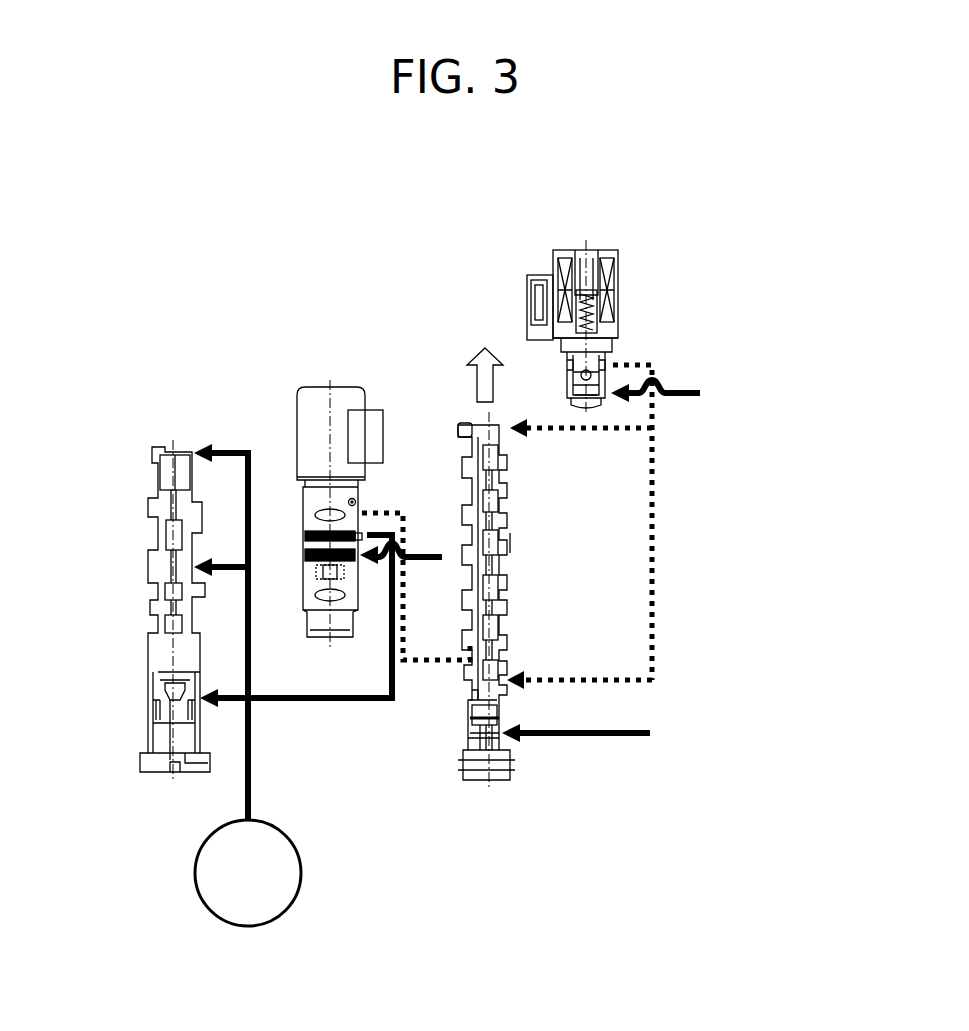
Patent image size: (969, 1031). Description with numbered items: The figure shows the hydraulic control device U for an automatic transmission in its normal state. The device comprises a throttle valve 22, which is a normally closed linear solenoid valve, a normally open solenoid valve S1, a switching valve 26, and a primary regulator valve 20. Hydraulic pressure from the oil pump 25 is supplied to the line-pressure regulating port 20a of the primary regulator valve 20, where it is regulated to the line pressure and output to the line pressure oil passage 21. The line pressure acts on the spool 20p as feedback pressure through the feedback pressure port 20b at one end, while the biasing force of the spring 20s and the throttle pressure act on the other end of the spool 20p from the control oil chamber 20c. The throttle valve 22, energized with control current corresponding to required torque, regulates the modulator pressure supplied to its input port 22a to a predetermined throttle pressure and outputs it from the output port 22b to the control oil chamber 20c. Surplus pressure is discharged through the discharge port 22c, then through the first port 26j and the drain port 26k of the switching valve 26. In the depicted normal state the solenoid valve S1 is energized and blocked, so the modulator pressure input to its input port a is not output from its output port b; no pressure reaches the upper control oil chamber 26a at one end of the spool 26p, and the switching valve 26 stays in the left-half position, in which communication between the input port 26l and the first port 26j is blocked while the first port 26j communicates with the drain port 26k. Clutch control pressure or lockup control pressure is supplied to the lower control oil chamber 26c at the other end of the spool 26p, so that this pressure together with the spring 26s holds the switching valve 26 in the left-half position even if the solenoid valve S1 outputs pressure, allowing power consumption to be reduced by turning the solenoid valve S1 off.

The primary regulator valve 20 is at (126, 494).
The line-pressure regulating port 20a is at (202, 547).
The feedback pressure port 20b is at (188, 452).
The control oil chamber 20c is at (230, 712).
The spool 20p is at (152, 681).
The spring 20s is at (150, 707).
The line pressure oil passage 21 is at (248, 503).
The throttle valve 22 is at (393, 400).
The input port 22a is at (378, 567).
The output port 22b is at (368, 530).
The discharge port 22c is at (357, 503).
The oil pump 25 is at (248, 928).
The switching valve 26 is at (450, 446).
The control oil chamber 26a is at (502, 423).
The control oil chamber 26c is at (501, 740).
The first port 26j is at (468, 665).
The drain port 26k is at (467, 625).
The input port 26l is at (509, 678).
The spool 26p is at (505, 453).
The spring 26s is at (466, 735).
The solenoid valve S1 is at (650, 244).
The hydraulic control device U is at (315, 255).
The input port a is at (612, 400).
The output port b is at (610, 363).